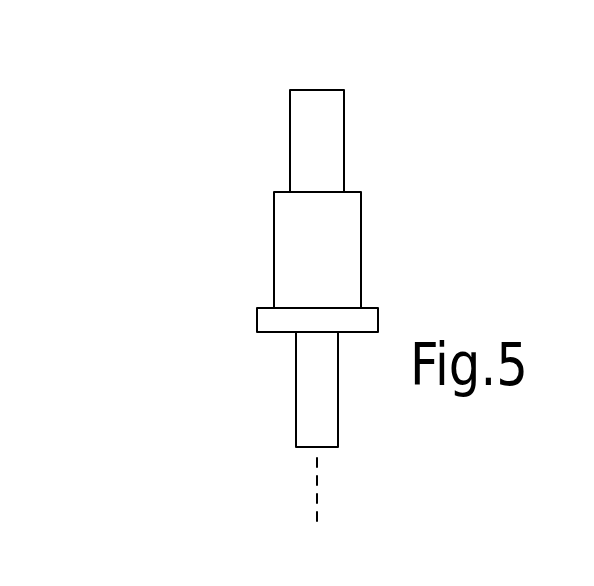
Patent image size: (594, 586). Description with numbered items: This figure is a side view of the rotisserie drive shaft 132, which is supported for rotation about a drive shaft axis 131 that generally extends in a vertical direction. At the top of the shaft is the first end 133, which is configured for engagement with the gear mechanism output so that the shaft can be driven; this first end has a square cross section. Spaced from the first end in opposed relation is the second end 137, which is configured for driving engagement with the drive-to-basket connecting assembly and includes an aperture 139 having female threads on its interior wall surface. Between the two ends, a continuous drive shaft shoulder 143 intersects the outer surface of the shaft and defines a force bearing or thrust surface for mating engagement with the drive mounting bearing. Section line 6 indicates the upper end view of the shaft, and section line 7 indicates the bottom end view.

The section line 7- 7 is at (207, 93).
The section line 6- 6 is at (203, 446).
The drive shaft axis 131 is at (318, 523).
The rotisserie drive shaft 132 is at (107, 235).
The first end 133 is at (310, 147).
The second end 137 is at (286, 395).
The aperture 139 is at (303, 458).
The drive shaft shoulder 143 is at (269, 316).